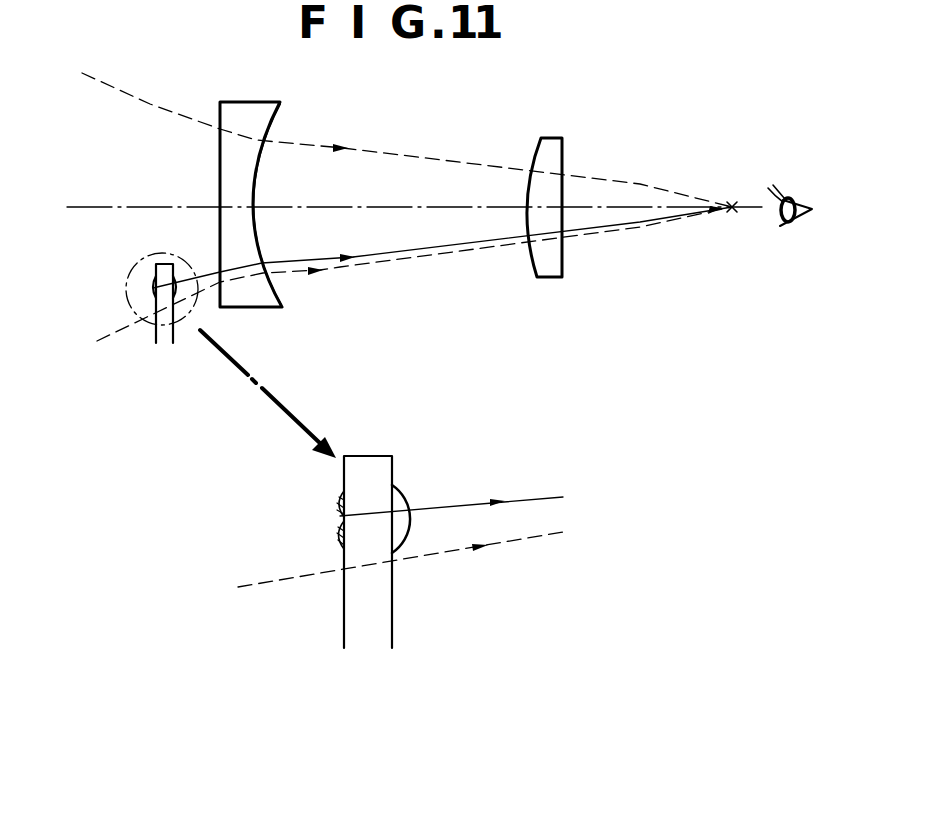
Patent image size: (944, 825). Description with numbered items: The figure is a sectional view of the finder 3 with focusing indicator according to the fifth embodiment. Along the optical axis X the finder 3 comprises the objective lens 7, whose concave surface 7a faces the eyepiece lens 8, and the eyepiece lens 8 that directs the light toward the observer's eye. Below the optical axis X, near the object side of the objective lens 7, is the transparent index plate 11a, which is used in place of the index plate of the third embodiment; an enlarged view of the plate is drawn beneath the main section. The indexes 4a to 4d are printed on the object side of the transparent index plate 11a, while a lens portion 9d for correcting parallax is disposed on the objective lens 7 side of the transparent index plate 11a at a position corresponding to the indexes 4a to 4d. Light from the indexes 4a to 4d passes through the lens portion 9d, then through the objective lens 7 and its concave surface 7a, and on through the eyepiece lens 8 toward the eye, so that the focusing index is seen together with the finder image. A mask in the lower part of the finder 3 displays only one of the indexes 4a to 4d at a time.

The finder 3 is at (411, 124).
The objective lens 7 is at (246, 102).
The concave surface of lens 7a is at (278, 286).
The lens 8 is at (545, 138).
The optical axis X is at (93, 210).
The index 4a is at (276, 505).
The index 4d is at (340, 501).
The lens portion 9d is at (402, 494).
The transparent index plate 11a is at (372, 455).